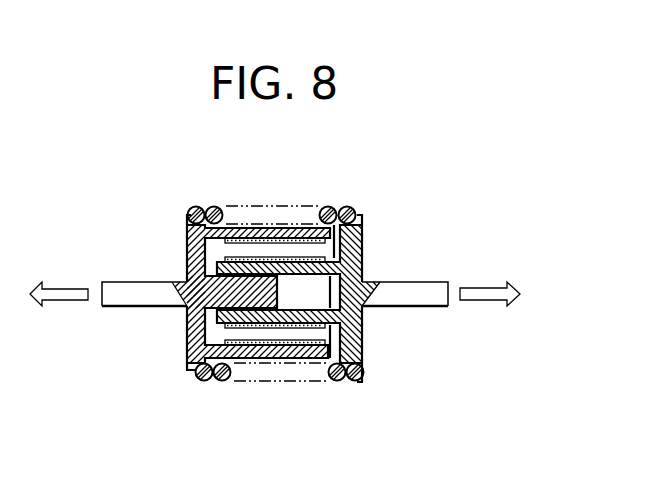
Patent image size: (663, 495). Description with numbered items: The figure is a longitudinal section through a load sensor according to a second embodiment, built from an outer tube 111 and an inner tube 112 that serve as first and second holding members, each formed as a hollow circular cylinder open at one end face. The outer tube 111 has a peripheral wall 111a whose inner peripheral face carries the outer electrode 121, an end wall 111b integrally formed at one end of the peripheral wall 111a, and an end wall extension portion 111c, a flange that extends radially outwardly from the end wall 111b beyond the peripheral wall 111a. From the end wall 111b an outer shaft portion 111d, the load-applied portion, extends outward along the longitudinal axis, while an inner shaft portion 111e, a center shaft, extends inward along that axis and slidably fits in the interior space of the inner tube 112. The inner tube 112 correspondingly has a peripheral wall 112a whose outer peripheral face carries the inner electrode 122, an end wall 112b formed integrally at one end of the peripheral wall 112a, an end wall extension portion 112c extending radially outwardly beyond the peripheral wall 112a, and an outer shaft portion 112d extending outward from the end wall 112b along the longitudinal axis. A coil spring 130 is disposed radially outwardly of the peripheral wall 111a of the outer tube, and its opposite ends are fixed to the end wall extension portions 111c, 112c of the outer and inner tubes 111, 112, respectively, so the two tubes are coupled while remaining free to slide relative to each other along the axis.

The outer tube 111 is at (172, 345).
The peripheral wall 111a is at (247, 368).
The end wall 111b is at (190, 258).
The end wall extension portion 111c is at (189, 226).
The outer shaft portion 111d is at (122, 297).
The inner shaft portion 111e is at (295, 287).
The inner tube 112 is at (375, 358).
The peripheral wall 112a is at (301, 322).
The end wall 112b is at (364, 258).
The end wall extension portion 112c is at (363, 218).
The outer shaft portion 112d is at (424, 297).
The outer electrode 121 is at (265, 346).
The inner electrode 122 is at (284, 330).
The coil spring 130 is at (336, 206).